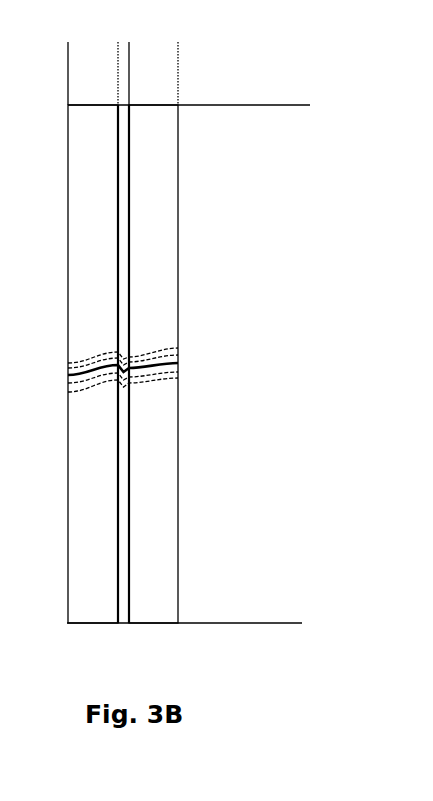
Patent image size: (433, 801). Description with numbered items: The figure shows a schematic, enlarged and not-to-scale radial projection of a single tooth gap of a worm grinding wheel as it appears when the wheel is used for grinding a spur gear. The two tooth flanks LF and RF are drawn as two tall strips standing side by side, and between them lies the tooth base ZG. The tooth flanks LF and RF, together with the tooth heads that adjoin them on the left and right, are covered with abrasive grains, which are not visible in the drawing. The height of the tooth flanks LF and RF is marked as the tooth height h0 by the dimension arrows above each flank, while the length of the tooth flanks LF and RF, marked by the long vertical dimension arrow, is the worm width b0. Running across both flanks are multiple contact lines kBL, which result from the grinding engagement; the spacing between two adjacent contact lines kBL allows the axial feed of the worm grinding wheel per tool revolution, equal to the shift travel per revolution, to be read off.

The tooth height h0 is at (117, 52).
The left tooth flank LF is at (93, 351).
The right tooth flank RF is at (153, 351).
The tooth base ZG is at (123, 378).
The contact lines kBL is at (68, 375).
The worm width b0 is at (271, 622).